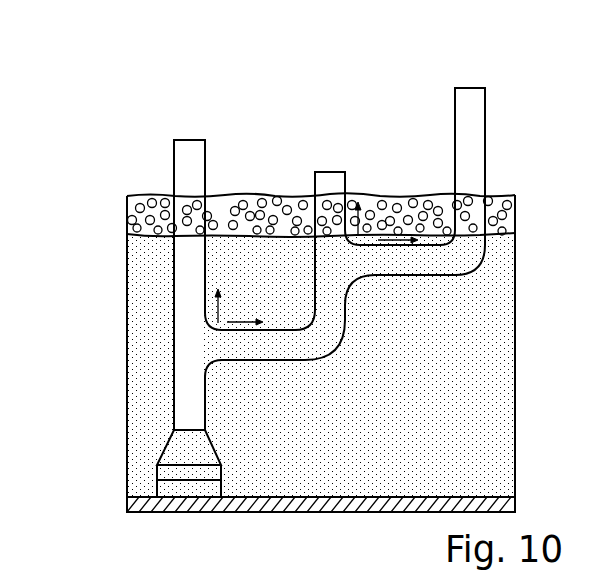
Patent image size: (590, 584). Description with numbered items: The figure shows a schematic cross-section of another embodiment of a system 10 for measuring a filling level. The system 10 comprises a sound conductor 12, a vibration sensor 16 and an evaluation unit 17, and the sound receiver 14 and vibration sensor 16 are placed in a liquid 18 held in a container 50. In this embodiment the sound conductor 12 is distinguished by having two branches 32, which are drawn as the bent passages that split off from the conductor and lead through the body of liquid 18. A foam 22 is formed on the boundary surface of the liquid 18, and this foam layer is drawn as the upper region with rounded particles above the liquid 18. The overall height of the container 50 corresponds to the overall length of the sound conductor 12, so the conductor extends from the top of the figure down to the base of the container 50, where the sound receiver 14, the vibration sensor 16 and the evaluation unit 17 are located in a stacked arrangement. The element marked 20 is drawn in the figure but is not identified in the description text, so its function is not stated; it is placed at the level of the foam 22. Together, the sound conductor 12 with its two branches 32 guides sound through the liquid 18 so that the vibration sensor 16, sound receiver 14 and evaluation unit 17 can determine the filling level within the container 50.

The system for measuring a filling level 10 is at (160, 122).
The sound conductor 12 is at (190, 258).
The sound receiver 14 is at (162, 470).
The vibration sensor 16 is at (178, 445).
The evaluation unit 17 is at (162, 490).
The liquid 18 is at (462, 323).
The particulate layer 20 is at (398, 177).
The foam 22 is at (226, 213).
The branches 32 is at (348, 260).
The container 50 is at (145, 508).